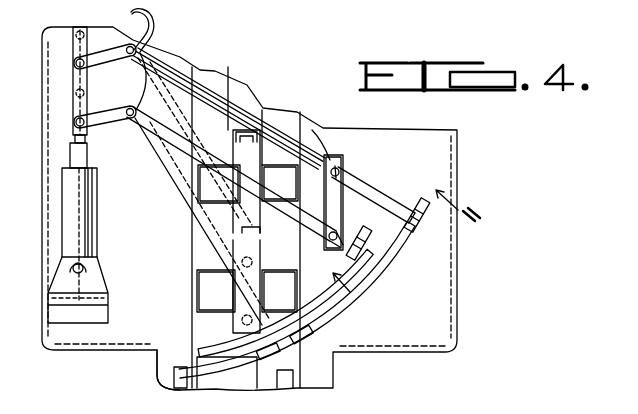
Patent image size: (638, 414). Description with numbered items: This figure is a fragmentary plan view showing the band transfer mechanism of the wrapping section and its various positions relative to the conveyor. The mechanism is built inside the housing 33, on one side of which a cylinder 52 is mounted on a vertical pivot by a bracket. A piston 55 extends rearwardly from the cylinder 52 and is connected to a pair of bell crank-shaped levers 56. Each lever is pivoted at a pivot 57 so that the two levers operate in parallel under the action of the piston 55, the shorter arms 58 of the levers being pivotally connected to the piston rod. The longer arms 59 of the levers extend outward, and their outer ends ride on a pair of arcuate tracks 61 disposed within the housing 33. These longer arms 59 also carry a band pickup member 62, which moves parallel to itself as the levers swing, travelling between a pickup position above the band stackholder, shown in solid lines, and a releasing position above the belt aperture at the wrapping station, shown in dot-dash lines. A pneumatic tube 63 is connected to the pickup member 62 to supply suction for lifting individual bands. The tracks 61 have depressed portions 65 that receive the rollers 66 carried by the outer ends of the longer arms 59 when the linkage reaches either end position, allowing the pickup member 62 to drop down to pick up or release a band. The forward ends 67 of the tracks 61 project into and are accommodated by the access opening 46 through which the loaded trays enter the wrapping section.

The housing 33 is at (457, 298).
The access opening 46 is at (160, 355).
The cylinder 52 is at (98, 222).
The piston 55 is at (86, 156).
The bell crank-shaped levers 56 is at (221, 90).
The pivot 57 is at (146, 48).
The shorter arms 58 is at (115, 107).
The longer arms 59 is at (372, 182).
The arcuate tracks 61 is at (355, 292).
The band pickup member 62 is at (326, 250).
The pneumatic tube 63 is at (325, 142).
The depressed portions 65 is at (378, 252).
The rollers 66 is at (428, 223).
The forward ends 67 is at (175, 387).